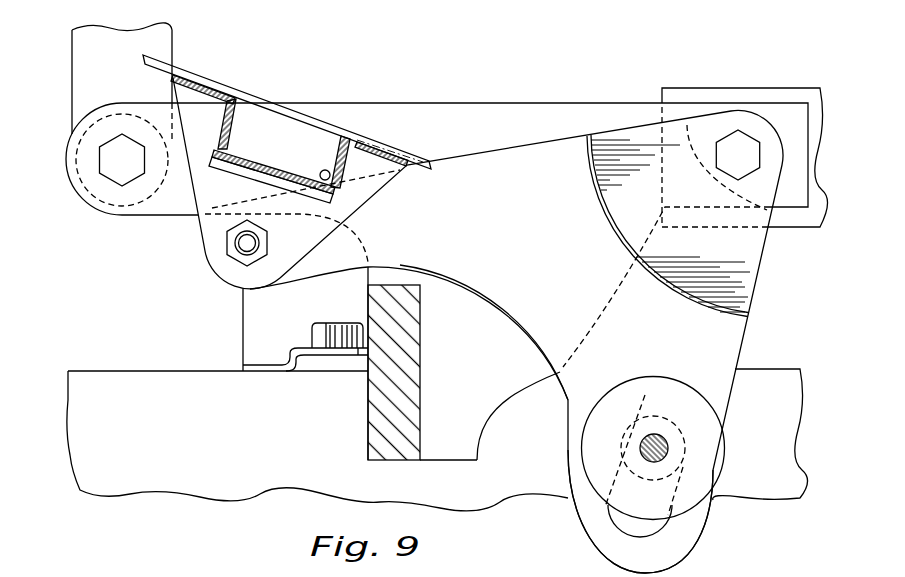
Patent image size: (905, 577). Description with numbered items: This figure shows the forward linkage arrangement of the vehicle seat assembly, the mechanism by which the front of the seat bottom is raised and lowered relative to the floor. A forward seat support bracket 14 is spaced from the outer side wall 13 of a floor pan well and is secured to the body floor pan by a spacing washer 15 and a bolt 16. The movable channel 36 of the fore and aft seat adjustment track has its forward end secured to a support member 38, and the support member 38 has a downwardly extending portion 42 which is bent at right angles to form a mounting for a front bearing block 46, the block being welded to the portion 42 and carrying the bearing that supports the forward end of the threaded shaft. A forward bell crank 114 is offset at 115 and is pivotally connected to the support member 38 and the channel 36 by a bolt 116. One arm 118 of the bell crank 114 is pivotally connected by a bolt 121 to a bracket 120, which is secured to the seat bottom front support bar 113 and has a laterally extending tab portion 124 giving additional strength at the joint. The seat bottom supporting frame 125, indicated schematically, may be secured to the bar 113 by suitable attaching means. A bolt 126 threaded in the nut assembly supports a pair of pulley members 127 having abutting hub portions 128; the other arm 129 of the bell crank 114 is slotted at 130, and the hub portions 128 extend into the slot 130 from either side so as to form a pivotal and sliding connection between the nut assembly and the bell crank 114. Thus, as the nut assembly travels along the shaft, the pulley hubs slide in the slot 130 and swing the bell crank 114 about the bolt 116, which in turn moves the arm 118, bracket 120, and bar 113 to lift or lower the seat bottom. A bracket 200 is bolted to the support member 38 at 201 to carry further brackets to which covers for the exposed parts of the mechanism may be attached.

The outer side wall 13 is at (87, 417).
The forward seat support bracket 14 is at (360, 350).
The spacing washer 15 is at (320, 358).
The bolt 16 is at (340, 323).
The channel 36 is at (710, 88).
The support member 38 is at (513, 107).
The downwardly extending portion 42 is at (522, 392).
The front bearing block 46 is at (368, 425).
The seat bottom front support bar 113 is at (232, 136).
The forward bell crank 114 is at (500, 307).
The offset 115 is at (600, 215).
The bolt 116 is at (745, 150).
The arm 118 is at (378, 263).
The bracket 120 is at (188, 208).
The bolt 121 is at (240, 247).
The laterally extending tab portion 124 is at (250, 174).
The seat bottom supporting frame 125 is at (240, 140).
The bolt 126 is at (643, 445).
The pulley member 127 is at (725, 455).
The hub portion 128 is at (643, 398).
The other arm 129 is at (582, 550).
The slot 130 is at (620, 533).
The bracket 200 is at (160, 46).
The bolt 201 is at (122, 150).